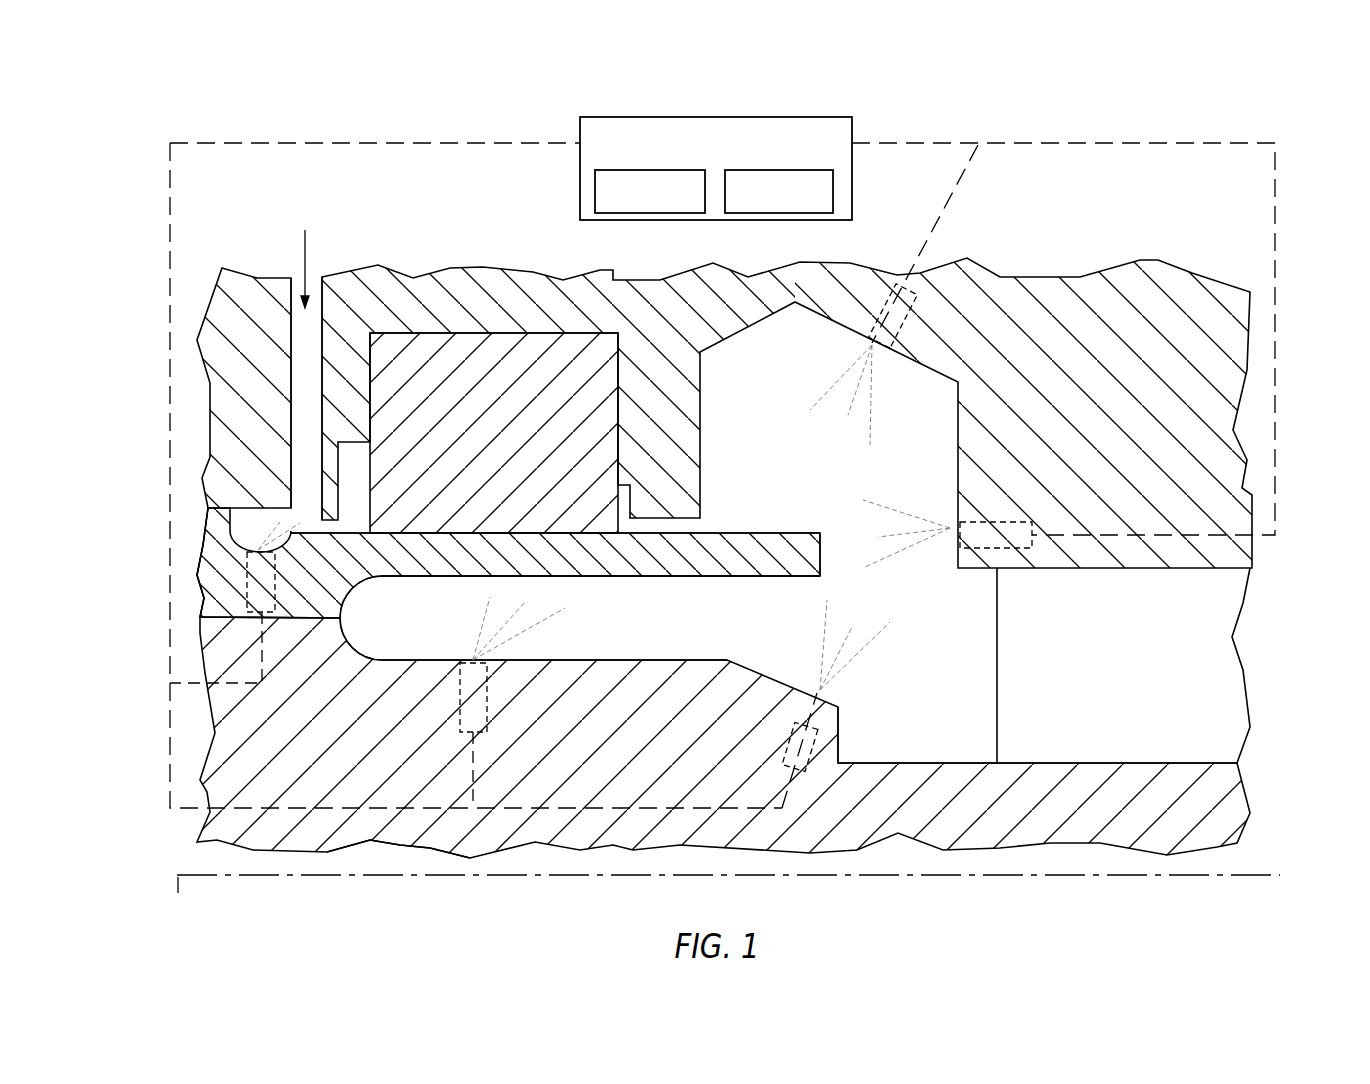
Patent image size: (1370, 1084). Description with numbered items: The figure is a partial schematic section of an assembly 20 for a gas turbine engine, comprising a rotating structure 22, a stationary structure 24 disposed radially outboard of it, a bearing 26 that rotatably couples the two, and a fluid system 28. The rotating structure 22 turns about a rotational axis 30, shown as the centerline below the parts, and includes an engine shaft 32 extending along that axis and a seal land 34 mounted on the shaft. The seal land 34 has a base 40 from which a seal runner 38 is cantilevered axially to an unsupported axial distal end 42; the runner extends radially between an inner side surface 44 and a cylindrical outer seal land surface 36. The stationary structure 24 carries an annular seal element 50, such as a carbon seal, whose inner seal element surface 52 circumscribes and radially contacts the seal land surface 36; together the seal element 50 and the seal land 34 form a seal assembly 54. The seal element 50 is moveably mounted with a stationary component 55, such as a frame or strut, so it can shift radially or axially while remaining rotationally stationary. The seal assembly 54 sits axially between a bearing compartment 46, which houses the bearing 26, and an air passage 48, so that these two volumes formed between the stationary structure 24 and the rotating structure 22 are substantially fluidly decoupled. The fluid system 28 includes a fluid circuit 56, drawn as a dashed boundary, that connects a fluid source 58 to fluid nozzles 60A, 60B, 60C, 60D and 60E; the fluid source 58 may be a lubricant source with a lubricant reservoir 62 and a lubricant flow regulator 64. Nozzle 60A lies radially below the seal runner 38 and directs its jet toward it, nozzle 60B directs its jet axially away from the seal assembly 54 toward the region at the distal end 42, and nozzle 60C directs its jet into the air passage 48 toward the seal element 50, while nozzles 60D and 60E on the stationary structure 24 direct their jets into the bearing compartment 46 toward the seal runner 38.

The assembly 20 is at (204, 104).
The rotating structure 22 is at (165, 840).
The stationary structure 24 is at (244, 244).
The bearing 26 is at (1267, 671).
The fluid system 28 is at (932, 104).
The rotational axis 30 is at (178, 893).
The engine shaft 32 is at (392, 857).
The seal land 34 is at (178, 600).
The seal land surface 36 is at (728, 533).
The seal runner 38 is at (632, 570).
The base 40 is at (213, 598).
The axial distal end 42 is at (820, 548).
The inner side surface 44 is at (747, 577).
The bearing compartment 46 is at (910, 630).
The air passage 48 is at (296, 412).
The seal element 50 is at (463, 450).
The seal element surface 52 is at (440, 533).
The seal assembly 54 is at (604, 596).
The stationary component 55 is at (500, 315).
The fluid circuit 56 is at (403, 143).
The fluid source 58 is at (775, 159).
The fluid nozzle 60A is at (487, 697).
The fluid nozzle 60B is at (795, 727).
The fluid nozzle 60C is at (277, 570).
The fluid nozzle 60D is at (923, 313).
The fluid nozzle 60E is at (995, 522).
The lubricant reservoir 62 is at (635, 207).
The lubricant flow regulator 64 is at (765, 207).